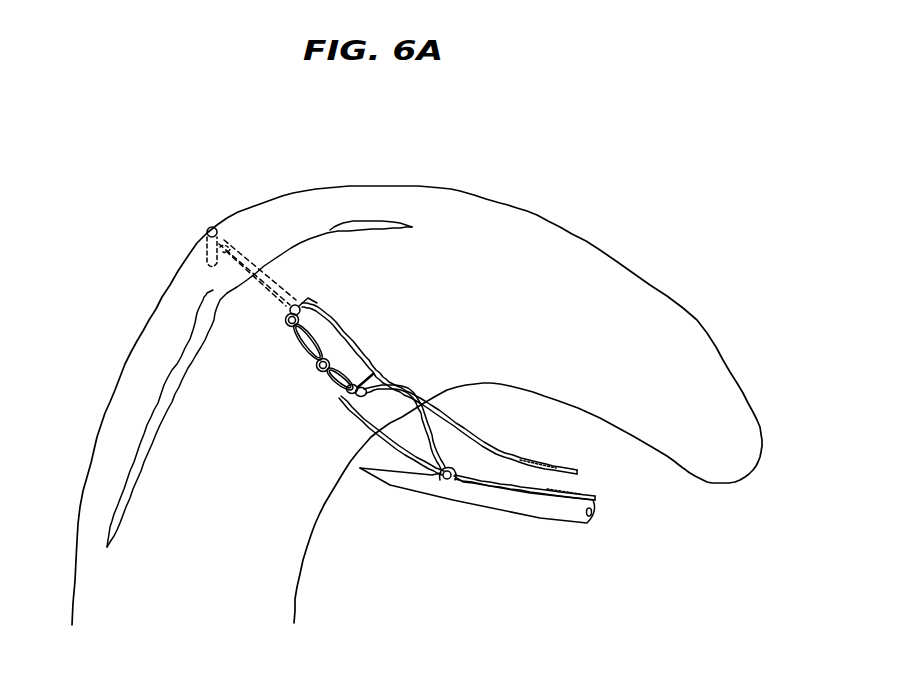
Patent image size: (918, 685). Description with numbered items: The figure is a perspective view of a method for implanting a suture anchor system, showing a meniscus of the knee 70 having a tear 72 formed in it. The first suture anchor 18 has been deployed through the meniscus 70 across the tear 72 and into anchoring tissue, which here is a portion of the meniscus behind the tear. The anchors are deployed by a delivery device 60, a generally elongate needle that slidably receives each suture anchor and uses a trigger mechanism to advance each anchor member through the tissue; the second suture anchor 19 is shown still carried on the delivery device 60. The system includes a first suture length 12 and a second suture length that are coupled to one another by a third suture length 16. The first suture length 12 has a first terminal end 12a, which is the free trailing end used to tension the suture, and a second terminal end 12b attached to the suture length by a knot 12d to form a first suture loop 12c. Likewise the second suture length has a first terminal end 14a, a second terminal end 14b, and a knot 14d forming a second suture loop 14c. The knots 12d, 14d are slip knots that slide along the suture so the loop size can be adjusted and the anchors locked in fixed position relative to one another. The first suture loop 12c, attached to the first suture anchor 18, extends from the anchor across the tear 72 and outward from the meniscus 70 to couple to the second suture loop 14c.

The first suture length 12 is at (353, 332).
The first terminal end 12a is at (563, 468).
The second terminal end 12b is at (312, 302).
The first suture loop 12c is at (262, 292).
The knot 12d is at (307, 299).
The first terminal end 14a is at (588, 492).
The second terminal end 14b is at (362, 380).
The second suture loop 14c is at (350, 412).
The knot 14d is at (352, 389).
The third suture length 16 is at (326, 350).
The first suture anchor 18 is at (209, 228).
The second suture anchor 19 is at (453, 487).
The delivery device 60 is at (557, 520).
The meniscus 70 is at (552, 329).
The tear 72 is at (331, 229).